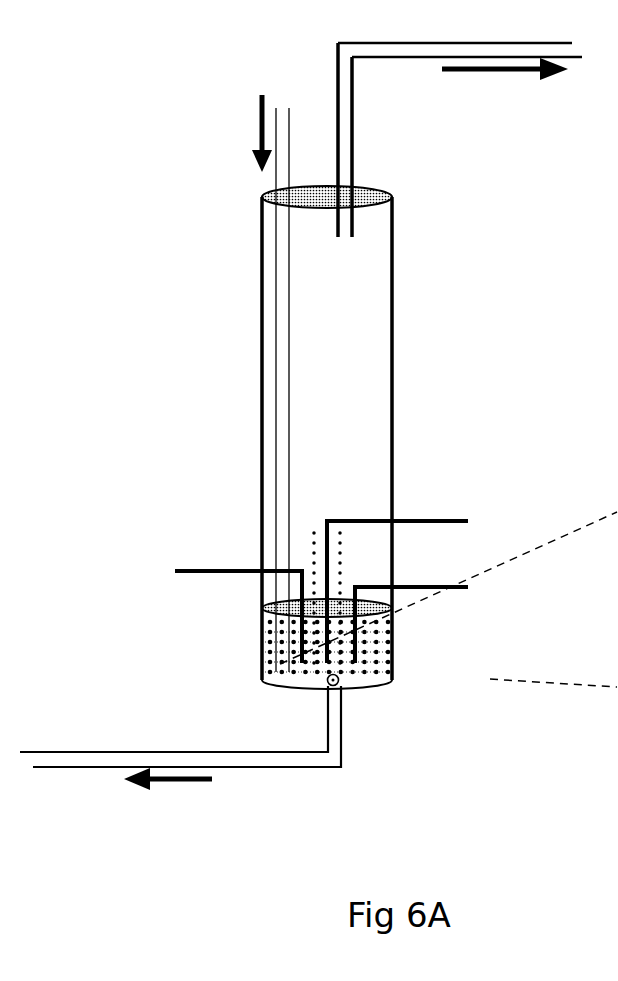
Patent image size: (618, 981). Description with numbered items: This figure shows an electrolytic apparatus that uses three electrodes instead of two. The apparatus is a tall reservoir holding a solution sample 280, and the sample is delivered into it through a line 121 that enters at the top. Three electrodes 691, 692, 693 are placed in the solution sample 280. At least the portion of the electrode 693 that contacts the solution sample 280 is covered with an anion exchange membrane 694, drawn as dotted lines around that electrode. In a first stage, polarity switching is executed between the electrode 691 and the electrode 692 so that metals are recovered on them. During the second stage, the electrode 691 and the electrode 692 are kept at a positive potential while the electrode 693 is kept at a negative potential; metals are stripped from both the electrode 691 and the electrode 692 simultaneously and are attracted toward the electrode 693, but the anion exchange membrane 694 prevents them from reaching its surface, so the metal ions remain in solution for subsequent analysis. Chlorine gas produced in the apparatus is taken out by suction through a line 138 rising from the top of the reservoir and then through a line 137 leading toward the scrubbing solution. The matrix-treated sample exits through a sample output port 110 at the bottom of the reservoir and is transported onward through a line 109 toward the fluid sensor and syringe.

The line 109 is at (288, 767).
The sample output port 110 is at (393, 677).
The line 121 is at (275, 248).
The line 137 is at (405, 57).
The line 138 is at (354, 158).
The solution sample 280 is at (278, 637).
The electrode 691 is at (173, 572).
The electrode 692 is at (455, 598).
The electrode 693 is at (432, 521).
The anion exchange membrane 694 is at (313, 562).